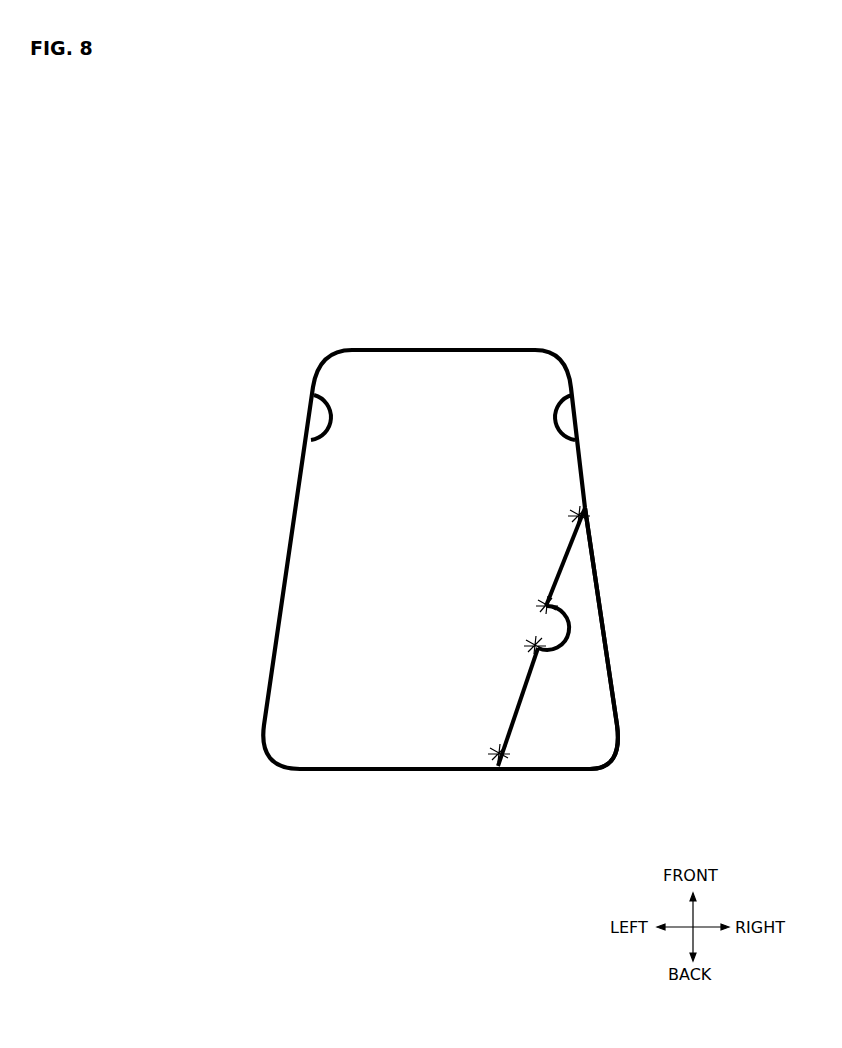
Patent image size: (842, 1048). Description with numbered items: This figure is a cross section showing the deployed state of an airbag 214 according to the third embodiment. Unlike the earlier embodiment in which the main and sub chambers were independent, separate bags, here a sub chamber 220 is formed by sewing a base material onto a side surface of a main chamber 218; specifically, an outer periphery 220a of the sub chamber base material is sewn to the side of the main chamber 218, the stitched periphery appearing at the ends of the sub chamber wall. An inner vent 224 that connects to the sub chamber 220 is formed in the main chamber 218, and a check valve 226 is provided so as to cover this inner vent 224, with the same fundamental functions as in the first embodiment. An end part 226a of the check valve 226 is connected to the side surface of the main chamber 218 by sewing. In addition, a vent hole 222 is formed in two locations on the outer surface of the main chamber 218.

The airbag 214 is at (463, 512).
The main chamber 218 is at (312, 490).
The sub chamber 220 is at (466, 638).
The outer periphery 220a is at (590, 520).
The vent hole 222 is at (310, 420).
The inner vent 224 is at (528, 625).
The check valve 226 is at (567, 627).
The end part 226a is at (580, 604).